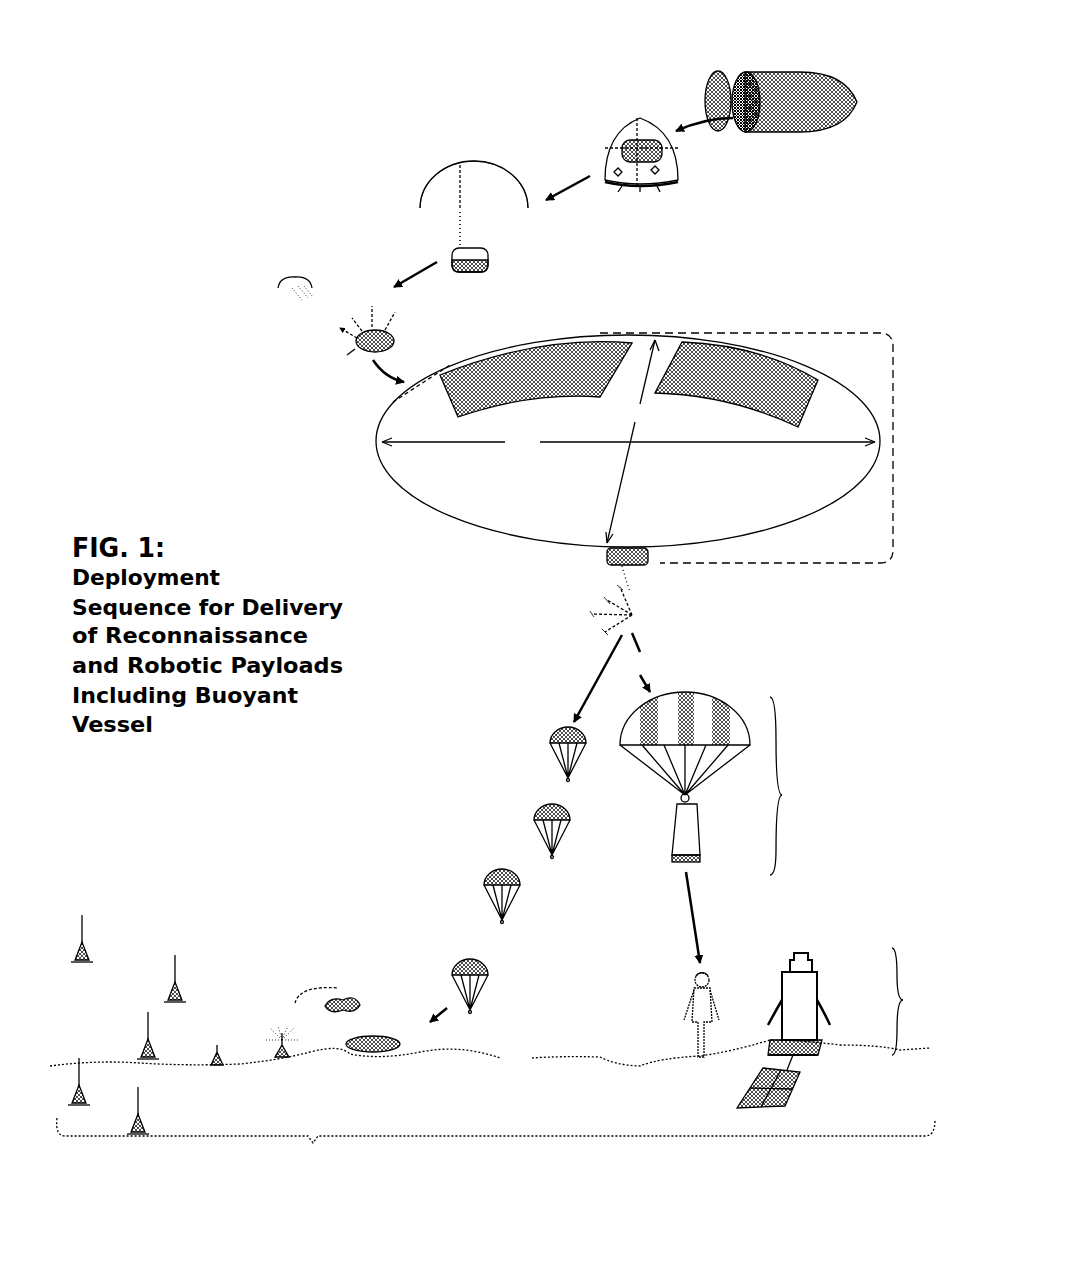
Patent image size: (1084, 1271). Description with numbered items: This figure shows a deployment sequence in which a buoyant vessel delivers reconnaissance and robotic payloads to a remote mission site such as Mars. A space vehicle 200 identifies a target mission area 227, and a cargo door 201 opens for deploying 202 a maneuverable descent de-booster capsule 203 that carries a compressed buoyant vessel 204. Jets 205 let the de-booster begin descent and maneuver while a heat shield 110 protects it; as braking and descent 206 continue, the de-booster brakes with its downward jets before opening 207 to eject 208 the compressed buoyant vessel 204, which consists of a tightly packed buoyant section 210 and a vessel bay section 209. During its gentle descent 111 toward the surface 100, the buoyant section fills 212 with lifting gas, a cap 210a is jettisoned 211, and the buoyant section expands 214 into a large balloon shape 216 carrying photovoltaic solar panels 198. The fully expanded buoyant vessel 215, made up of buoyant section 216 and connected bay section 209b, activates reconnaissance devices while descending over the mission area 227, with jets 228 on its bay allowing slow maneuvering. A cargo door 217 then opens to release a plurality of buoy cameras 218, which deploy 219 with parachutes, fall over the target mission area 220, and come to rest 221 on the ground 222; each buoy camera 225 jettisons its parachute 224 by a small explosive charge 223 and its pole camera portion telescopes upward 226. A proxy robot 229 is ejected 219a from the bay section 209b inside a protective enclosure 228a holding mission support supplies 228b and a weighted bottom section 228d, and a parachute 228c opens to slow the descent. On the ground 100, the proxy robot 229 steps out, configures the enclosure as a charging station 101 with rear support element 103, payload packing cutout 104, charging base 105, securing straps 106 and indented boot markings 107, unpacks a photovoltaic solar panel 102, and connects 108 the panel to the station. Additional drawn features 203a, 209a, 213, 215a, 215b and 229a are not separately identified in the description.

The surface of the planet 100 is at (490, 1053).
The proxy robot charging station 101 is at (819, 1027).
The photovoltaic solar panel 102 is at (762, 1082).
The rear support element 103 is at (813, 956).
The payload packing cutout 104 is at (812, 986).
The charging base 105 is at (812, 1056).
The securing straps 106 is at (832, 1010).
The indented boot markings 107 is at (800, 1042).
The connection of solar panel to charging station 108 is at (785, 1062).
The heat shield 110 is at (668, 184).
The gentle descent 111 is at (410, 270).
The photovoltaic solar panels 198 is at (705, 370).
The space vehicle 200 is at (814, 128).
The cargo door 201 is at (712, 99).
The deployment of de-booster 202 is at (705, 136).
The maneuverable descent de-booster capsule 203 is at (623, 125).
The deployed decelerator 203a is at (420, 206).
The compressed buoyant vessel 204 is at (662, 158).
The jets 205 is at (650, 188).
The braking and descent 206 is at (568, 196).
The opening of de-booster 207 is at (536, 170).
The ejection of compressed buoyant vessel 208 is at (488, 226).
The vessel bay section 209 is at (470, 274).
The inflating buoyant vessel 209a is at (396, 342).
The bay section 209b is at (636, 548).
The buoyant section 210 is at (490, 256).
The cap 210a is at (278, 286).
The jettison of cap 211 is at (296, 306).
The filling with lifting gas 212 is at (369, 321).
The inflation nozzle 213 is at (355, 349).
The expansion of buoyant section 214 is at (378, 373).
The buoyant vessel 215 is at (893, 442).
The vessel height dimension 215a is at (633, 441).
The vessel width dimension 215b is at (628, 442).
The balloon section 216 is at (408, 494).
The cargo door 217 is at (628, 568).
The buoy cameras 218 is at (624, 610).
The deployment of buoy cameras 219 is at (598, 678).
The ejection of proxy robot 219a is at (652, 662).
The target mission area 220 is at (455, 950).
The coming to rest 221 is at (442, 1006).
The ground 222 is at (396, 1038).
The small explosive charge 223 is at (284, 1031).
The parachute 224 is at (343, 999).
The buoy camera 225 is at (272, 1044).
The telescoping of pole camera 226 is at (135, 1083).
The target mission area 227 is at (311, 1145).
The jets 228 is at (717, 769).
The protective enclosure 228a is at (698, 842).
The mission support supplies 228b is at (690, 799).
The parachute 228c is at (705, 690).
The weighted bottom section 228d is at (702, 858).
The proxy robot 229 is at (690, 990).
The operator helmet 229a is at (712, 984).